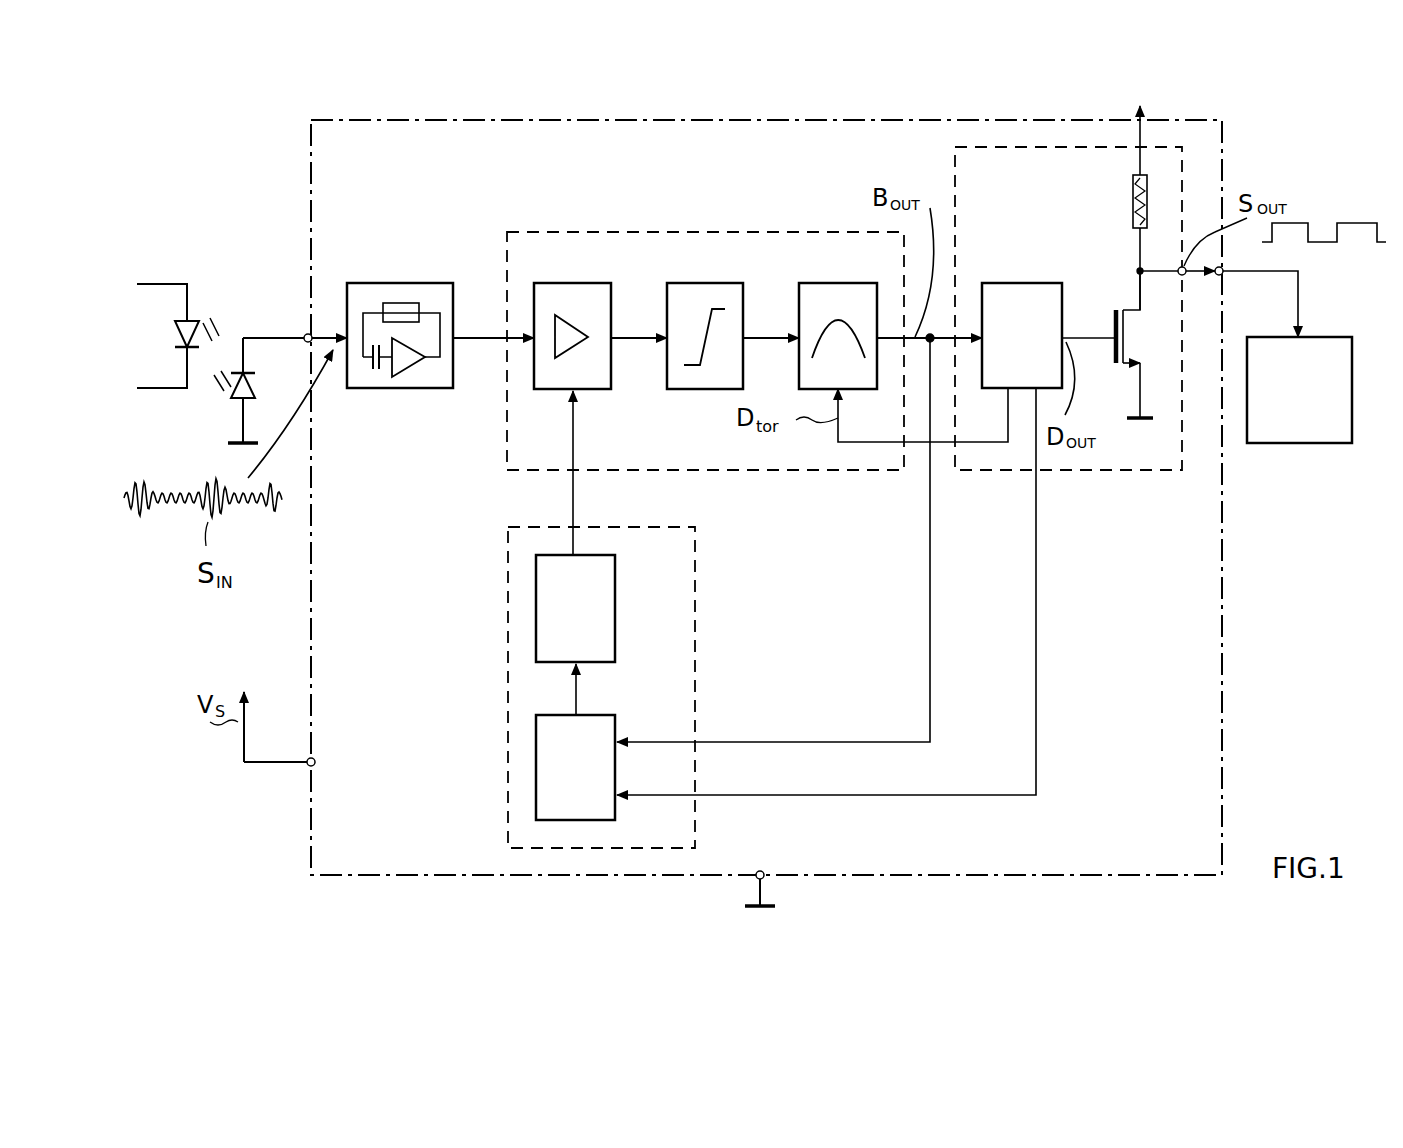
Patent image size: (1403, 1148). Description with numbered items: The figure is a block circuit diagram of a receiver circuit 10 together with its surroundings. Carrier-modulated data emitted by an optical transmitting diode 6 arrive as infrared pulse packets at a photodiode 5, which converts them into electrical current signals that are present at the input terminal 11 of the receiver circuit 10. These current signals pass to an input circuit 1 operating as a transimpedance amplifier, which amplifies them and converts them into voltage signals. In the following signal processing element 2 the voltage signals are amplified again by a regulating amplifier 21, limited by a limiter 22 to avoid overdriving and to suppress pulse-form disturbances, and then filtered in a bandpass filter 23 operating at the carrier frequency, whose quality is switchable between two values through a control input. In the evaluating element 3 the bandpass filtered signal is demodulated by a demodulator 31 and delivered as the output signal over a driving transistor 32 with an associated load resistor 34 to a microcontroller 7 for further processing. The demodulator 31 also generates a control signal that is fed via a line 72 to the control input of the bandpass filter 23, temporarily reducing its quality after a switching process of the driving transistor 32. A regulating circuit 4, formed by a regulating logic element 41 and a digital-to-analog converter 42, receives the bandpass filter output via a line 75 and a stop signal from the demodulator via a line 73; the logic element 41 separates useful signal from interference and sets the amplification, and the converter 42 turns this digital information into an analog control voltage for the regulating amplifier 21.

The input circuit 1 is at (400, 389).
The signal processing element 2 is at (668, 232).
The evaluating element 3 is at (952, 168).
The regulating circuit 4 is at (506, 692).
The photodiode 5 is at (260, 382).
The optical transmitting diode 6 is at (170, 335).
The microcontroller 7 is at (1297, 445).
The receiver circuit 10 is at (1223, 733).
The input terminal 11 is at (305, 336).
The regulating amplifier 21 is at (566, 283).
The limiter 22 is at (686, 283).
The bandpass filter 23 is at (820, 283).
The demodulator 31 is at (1016, 283).
The driving transistor 32 is at (1122, 305).
The load resistor 34 is at (1134, 203).
The regulating logic element 41 is at (616, 712).
The digital-to-analog converter 42 is at (618, 576).
The line 72 is at (838, 445).
The line 73 is at (813, 800).
The line 75 is at (816, 745).